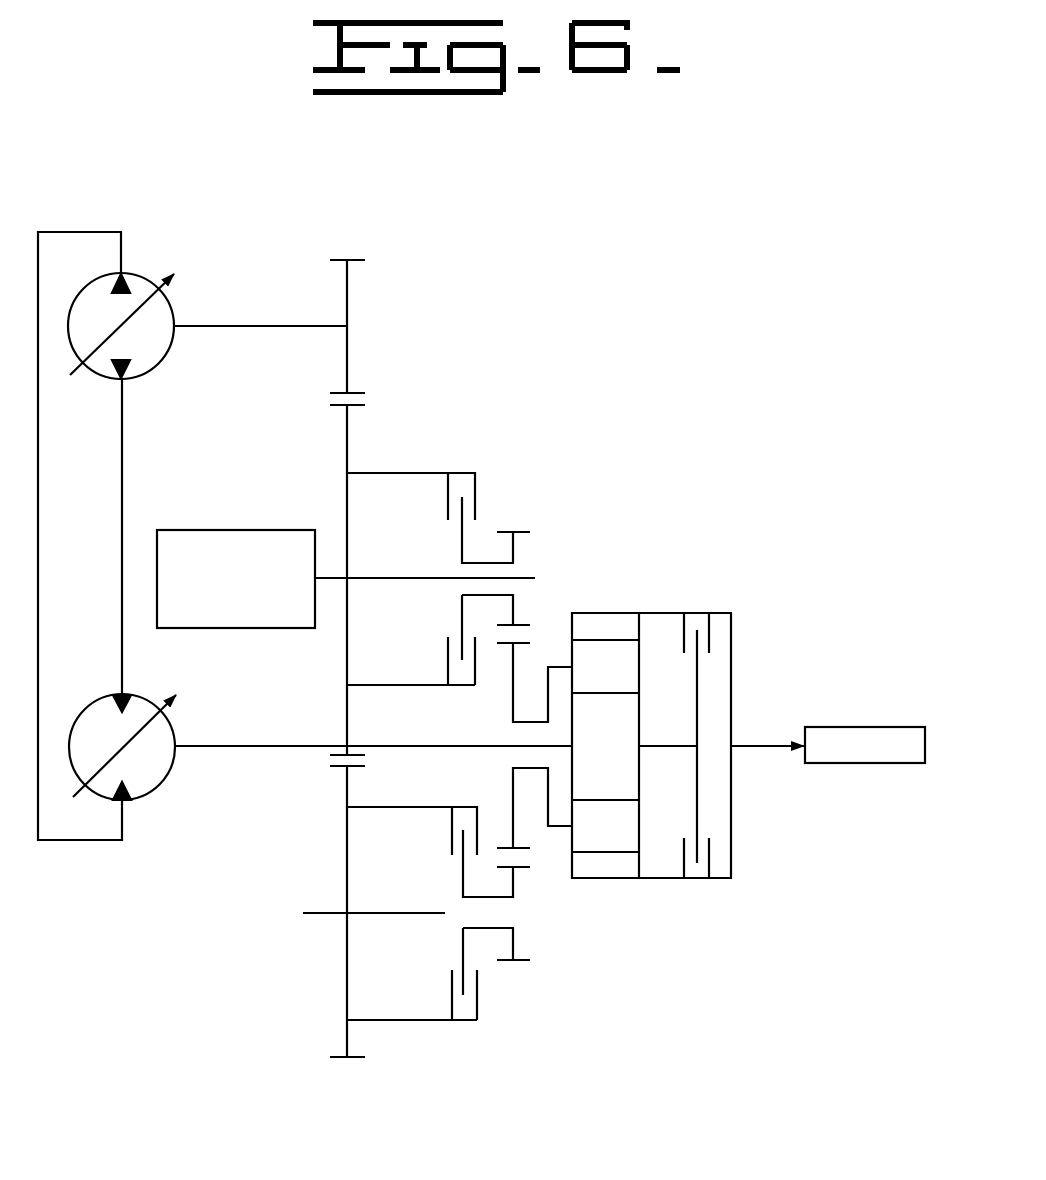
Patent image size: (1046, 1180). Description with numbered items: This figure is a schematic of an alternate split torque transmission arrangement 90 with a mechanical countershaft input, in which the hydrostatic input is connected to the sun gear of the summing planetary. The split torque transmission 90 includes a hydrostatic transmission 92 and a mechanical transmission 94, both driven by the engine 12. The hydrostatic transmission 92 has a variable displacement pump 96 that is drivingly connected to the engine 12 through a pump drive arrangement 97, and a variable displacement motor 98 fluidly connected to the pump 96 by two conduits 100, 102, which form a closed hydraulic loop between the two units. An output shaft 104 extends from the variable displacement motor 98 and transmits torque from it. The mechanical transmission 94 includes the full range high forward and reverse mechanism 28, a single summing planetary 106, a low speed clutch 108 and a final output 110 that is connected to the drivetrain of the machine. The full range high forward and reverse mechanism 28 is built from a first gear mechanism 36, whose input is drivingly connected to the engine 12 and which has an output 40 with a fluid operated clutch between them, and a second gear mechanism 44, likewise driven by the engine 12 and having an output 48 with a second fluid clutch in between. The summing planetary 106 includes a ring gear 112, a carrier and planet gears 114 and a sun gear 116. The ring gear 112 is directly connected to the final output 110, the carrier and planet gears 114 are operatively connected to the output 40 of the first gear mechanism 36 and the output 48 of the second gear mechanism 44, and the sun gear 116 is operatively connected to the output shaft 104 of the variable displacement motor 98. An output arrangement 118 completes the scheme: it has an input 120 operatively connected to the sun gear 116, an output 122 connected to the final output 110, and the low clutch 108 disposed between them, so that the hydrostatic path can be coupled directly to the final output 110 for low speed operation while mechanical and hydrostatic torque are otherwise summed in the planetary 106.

The engine 12 is at (213, 530).
The full range high forward and reverse mechanism 28 is at (453, 1049).
The first gear mechanism 36 is at (433, 460).
The output of the first gear mechanism 40 is at (513, 555).
The second gear mechanism 44 is at (395, 1049).
The output of the second gear mechanism 48 is at (513, 886).
The split torque transmission arrangement 90 is at (643, 257).
The hydrostatic transmission 92 is at (203, 255).
The mechanical transmission 94 is at (577, 988).
The variable displacement pump 96 is at (167, 353).
The pump drive arrangement 97 is at (360, 357).
The variable displacement motor 98 is at (163, 786).
The conduit 100 is at (123, 473).
The conduit 102 is at (38, 515).
The output shaft 104 is at (278, 745).
The single summing planetary 106 is at (605, 900).
The low speed clutch 108 is at (700, 613).
The final output 110 is at (775, 747).
The ring gear 112 is at (615, 613).
The carrier and planet gears 114 is at (639, 647).
The sun gear 116 is at (639, 762).
The output arrangement 118 is at (712, 902).
The input of the output arrangement 120 is at (642, 746).
The output of the output arrangement 122 is at (731, 668).